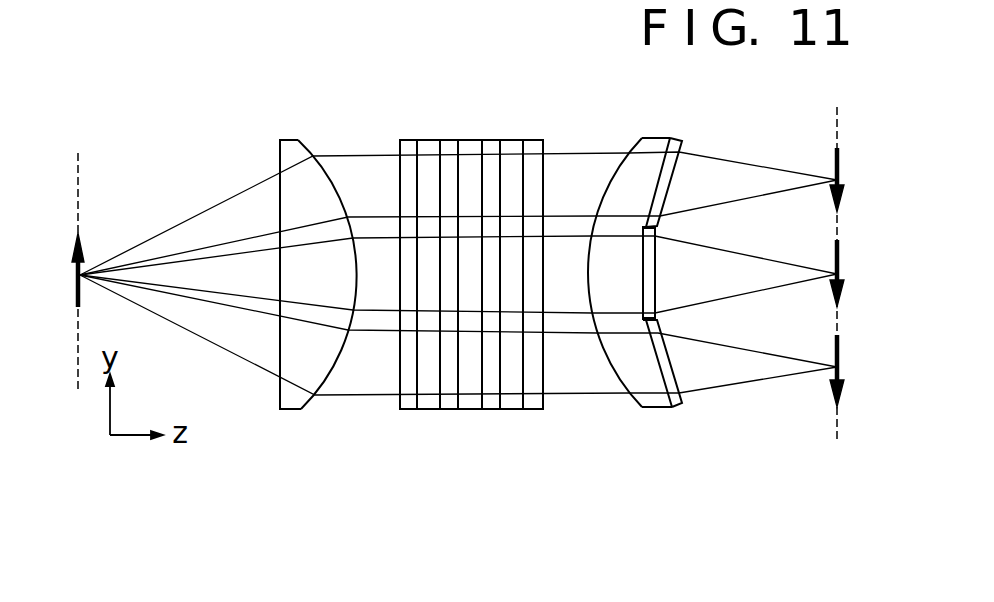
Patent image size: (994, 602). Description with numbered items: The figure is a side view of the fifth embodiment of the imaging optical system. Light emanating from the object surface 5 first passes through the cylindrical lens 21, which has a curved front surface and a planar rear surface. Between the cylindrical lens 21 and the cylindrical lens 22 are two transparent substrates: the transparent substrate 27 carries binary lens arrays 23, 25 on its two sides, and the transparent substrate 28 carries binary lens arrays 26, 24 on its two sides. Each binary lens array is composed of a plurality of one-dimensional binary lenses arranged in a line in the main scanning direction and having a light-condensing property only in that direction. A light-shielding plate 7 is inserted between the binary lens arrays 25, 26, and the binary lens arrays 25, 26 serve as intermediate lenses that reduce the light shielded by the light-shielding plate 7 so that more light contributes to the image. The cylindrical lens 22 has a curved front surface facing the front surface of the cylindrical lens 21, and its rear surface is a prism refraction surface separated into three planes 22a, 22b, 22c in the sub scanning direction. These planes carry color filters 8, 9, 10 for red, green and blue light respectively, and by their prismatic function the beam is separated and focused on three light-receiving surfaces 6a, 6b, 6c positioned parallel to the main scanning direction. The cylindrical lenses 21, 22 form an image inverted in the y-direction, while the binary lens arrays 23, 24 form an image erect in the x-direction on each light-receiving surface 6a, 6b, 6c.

The object surface 5 is at (78, 200).
The cylindrical lens 21 is at (296, 152).
The light-shielding plate 7 is at (466, 140).
The binary lens array 23 is at (405, 140).
The transparent substrate 27 is at (428, 405).
The binary lens array 25 is at (452, 418).
The binary lens array 26 is at (494, 418).
The transparent substrate 28 is at (518, 405).
The binary lens array 24 is at (530, 140).
The cylindrical lens 22 is at (656, 150).
The plane 22a is at (655, 180).
The plane 22b is at (638, 278).
The plane 22c is at (657, 368).
The color filter 8 is at (678, 152).
The color filter 9 is at (652, 285).
The color filter 10 is at (682, 395).
The light-receiving surface 6a is at (833, 138).
The light-receiving surface 6b is at (833, 232).
The light-receiving surface 6c is at (833, 323).